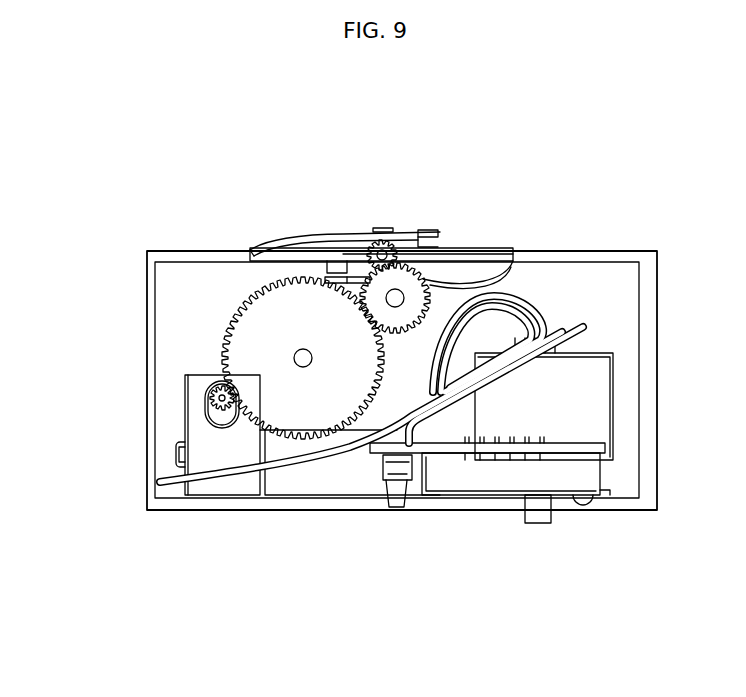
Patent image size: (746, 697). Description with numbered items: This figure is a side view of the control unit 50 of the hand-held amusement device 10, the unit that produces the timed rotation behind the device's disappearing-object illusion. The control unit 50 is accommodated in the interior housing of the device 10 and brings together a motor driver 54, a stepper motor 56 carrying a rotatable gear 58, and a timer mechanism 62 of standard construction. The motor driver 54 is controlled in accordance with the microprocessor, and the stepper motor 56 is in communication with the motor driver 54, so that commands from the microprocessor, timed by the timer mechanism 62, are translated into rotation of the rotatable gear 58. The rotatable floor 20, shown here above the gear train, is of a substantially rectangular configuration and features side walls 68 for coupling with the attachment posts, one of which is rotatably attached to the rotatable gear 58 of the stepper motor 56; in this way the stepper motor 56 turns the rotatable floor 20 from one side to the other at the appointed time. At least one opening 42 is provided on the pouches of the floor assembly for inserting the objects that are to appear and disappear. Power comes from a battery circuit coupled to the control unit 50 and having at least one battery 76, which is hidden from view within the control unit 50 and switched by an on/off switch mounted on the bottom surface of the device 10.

The device 10 is at (578, 520).
The rotatable floor 20 is at (427, 227).
The opening 42 is at (330, 270).
The control unit 50 is at (555, 313).
The motor driver 54 is at (578, 397).
The stepper motor 56 is at (198, 432).
The rotatable gear 58 is at (375, 243).
The timer mechanism 62 is at (393, 460).
The side walls 68 is at (282, 250).
The battery 76 is at (175, 457).